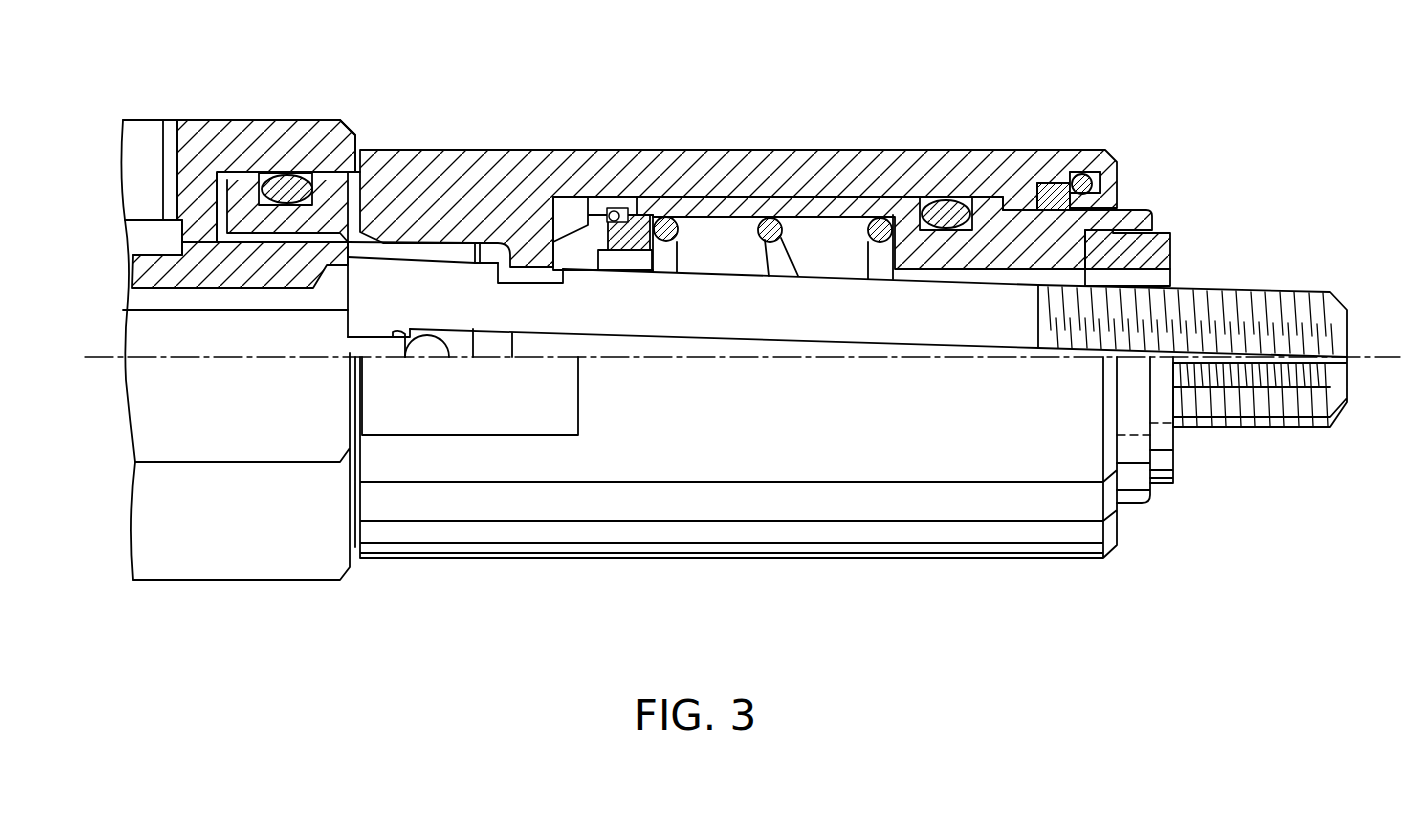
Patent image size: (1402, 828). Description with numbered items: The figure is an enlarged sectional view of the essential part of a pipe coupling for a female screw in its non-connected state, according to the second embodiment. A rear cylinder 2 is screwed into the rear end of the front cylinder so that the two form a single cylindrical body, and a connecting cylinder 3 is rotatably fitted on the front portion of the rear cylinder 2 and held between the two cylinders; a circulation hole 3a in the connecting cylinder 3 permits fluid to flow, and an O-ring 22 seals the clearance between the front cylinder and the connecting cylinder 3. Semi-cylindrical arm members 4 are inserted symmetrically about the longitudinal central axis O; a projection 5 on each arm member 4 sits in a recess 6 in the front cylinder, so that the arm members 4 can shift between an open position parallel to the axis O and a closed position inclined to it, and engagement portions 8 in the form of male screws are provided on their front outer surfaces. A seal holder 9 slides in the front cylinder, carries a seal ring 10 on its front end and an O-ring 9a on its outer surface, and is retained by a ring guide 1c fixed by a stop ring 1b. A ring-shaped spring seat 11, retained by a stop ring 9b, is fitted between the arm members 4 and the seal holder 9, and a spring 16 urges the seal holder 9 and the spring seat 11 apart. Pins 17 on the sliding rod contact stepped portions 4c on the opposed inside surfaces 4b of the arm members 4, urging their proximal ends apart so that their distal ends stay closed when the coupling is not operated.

The stop ring 1b is at (1093, 186).
The ring guide 1c is at (1053, 187).
The rear cylinder 2 is at (220, 278).
The connecting cylinder 3 is at (262, 125).
The circulation hole 3a is at (148, 131).
The arm member 4 is at (724, 338).
The inside surface 4b is at (690, 341).
The stepped portion 4c is at (394, 341).
The projection 5 is at (363, 300).
The recess 6 is at (441, 250).
The engagement portion 8 is at (1250, 421).
The seal holder 9 is at (1015, 218).
The O-ring 9a is at (946, 205).
The stop ring 9b is at (610, 211).
The seal ring 10 is at (1160, 248).
The ring-shaped spring seat 11 is at (640, 222).
The spring 16 is at (773, 223).
The pin 17 is at (428, 349).
The O-ring 22 is at (297, 176).
The longitudinal central axis O is at (800, 362).